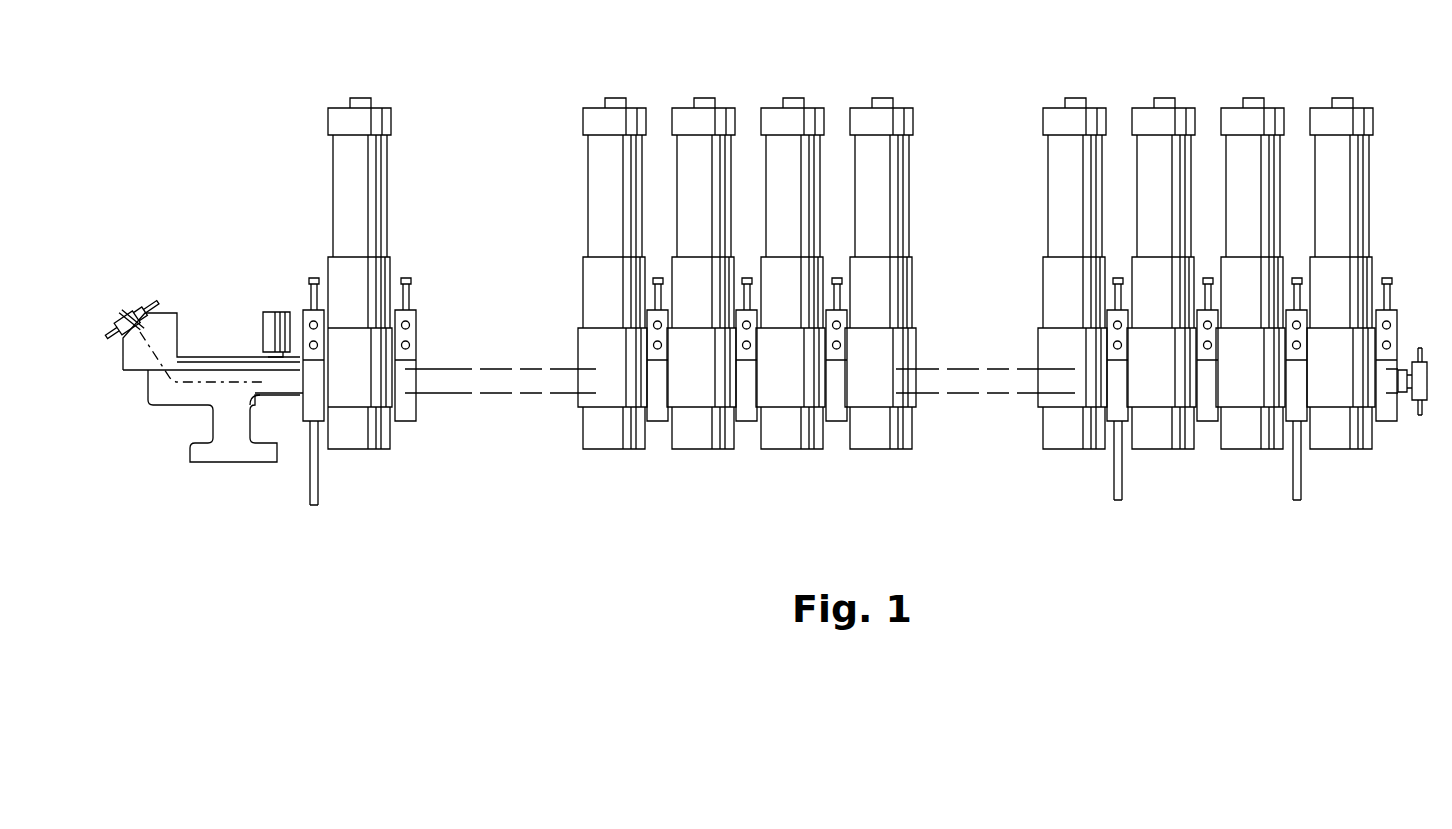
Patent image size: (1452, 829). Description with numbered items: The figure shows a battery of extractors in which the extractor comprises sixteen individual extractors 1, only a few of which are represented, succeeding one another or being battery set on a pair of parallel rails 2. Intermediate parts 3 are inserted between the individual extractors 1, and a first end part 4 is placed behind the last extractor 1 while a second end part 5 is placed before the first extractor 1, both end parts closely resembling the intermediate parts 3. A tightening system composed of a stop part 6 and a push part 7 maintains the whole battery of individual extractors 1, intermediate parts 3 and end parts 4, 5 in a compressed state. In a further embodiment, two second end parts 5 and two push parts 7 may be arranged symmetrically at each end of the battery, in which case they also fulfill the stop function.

The individual extractor 1 is at (358, 85).
The parallel rails 2 is at (490, 380).
The intermediate part 3 is at (655, 418).
The first end part 4 is at (1400, 328).
The second end part 5 is at (301, 405).
The stop part 6 is at (1438, 413).
The push part 7 is at (235, 483).